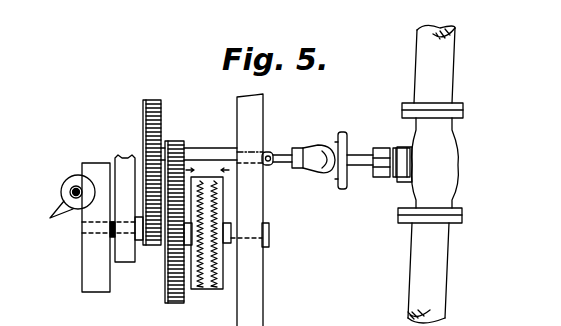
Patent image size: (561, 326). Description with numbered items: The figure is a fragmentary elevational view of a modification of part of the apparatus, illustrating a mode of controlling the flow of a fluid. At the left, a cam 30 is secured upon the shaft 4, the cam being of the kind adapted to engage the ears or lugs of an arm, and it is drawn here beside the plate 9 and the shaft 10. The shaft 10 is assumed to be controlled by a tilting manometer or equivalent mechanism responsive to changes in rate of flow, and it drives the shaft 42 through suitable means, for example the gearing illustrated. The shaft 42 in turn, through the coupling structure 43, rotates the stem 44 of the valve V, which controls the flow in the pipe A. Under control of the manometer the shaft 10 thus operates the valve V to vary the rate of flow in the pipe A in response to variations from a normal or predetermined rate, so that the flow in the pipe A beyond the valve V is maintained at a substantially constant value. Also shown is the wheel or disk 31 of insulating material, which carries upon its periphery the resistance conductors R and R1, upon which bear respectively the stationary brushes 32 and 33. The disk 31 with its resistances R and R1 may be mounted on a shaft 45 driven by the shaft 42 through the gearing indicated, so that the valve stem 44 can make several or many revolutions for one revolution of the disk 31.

The shaft 4 is at (73, 189).
The cam 30 is at (64, 222).
The plate 9 is at (85, 292).
The shaft 10 is at (125, 262).
The wheel or disk 31 is at (207, 177).
The stationary brush 32 is at (199, 175).
The stationary brush 33 is at (215, 176).
The resistance conductor R is at (197, 282).
The resistance conductor R1 is at (206, 288).
The shaft 42 is at (224, 152).
The coupling structure 43 is at (302, 150).
The valve stem 44 is at (359, 160).
The shaft 45 is at (240, 227).
The pipe A is at (445, 70).
The valve V is at (448, 155).